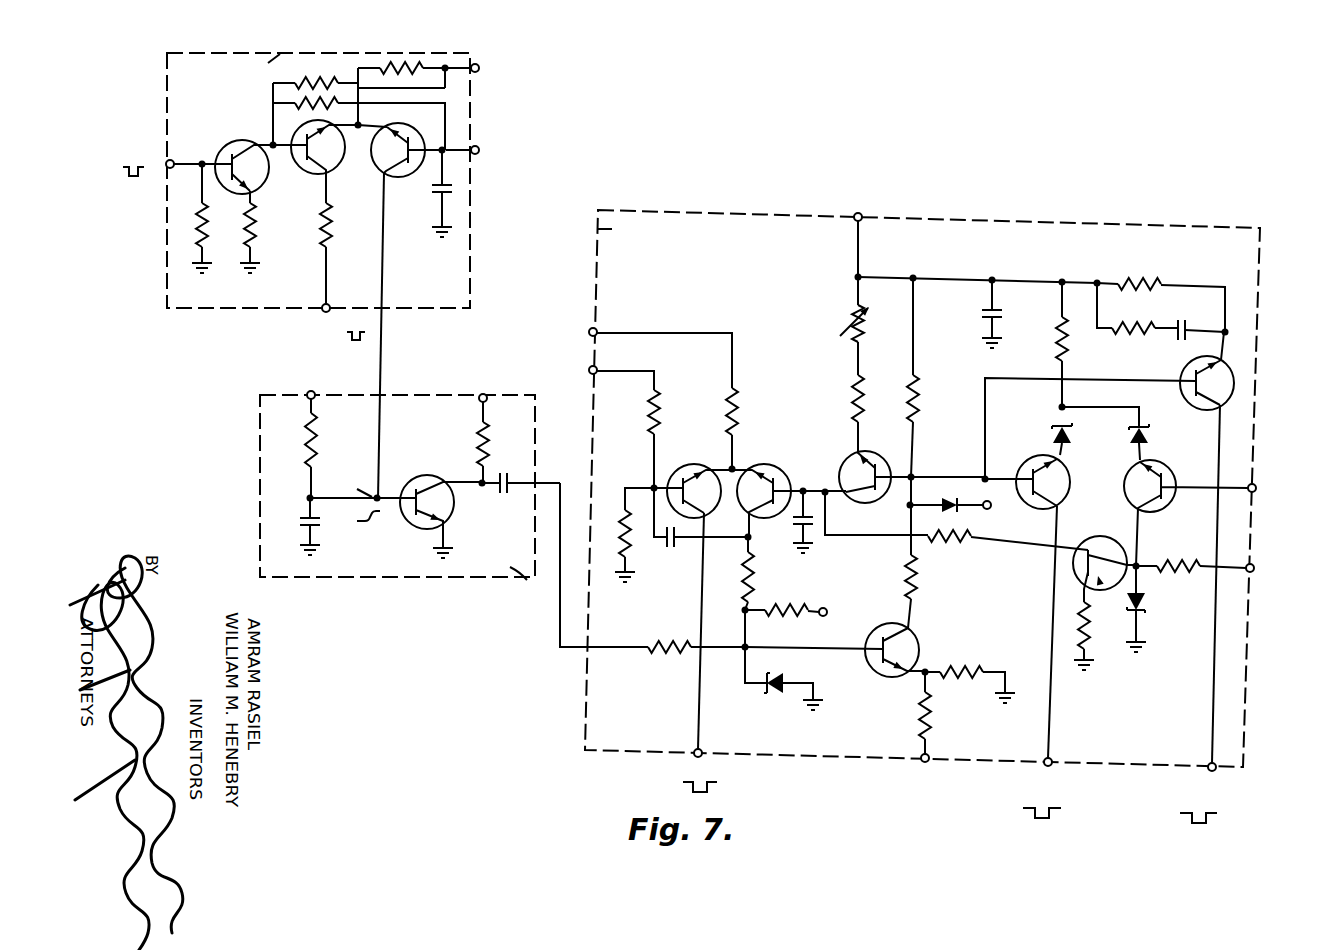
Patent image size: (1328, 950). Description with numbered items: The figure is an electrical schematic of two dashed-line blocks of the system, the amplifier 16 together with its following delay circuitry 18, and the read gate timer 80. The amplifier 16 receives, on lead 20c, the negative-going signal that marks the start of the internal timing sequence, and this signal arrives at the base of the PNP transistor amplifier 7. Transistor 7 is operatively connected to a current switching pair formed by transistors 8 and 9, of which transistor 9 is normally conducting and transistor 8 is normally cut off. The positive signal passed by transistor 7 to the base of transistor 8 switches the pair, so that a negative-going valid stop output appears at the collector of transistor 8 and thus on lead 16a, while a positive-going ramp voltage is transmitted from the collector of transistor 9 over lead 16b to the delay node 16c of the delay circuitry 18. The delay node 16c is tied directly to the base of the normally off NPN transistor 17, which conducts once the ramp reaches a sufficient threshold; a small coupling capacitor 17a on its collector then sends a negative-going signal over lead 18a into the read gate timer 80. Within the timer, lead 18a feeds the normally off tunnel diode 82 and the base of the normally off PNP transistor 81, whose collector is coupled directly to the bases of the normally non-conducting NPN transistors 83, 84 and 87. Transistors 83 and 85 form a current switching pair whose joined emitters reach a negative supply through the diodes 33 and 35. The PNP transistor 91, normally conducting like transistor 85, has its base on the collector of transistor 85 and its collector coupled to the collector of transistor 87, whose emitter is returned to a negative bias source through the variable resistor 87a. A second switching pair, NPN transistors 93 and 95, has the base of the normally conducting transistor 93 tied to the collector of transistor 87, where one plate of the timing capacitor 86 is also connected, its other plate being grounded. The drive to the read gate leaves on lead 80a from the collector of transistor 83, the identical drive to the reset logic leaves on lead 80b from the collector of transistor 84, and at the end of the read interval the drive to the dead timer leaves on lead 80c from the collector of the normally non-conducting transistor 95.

The PNP transistor amplifier 7 is at (258, 176).
The transistor 8 is at (330, 163).
The transistor 9 is at (394, 170).
The amplifier 16 is at (170, 121).
The lead 16a is at (323, 283).
The lead 16b is at (387, 267).
The delay node 16c is at (378, 496).
The transistor 17 is at (429, 480).
The coupling capacitor 17a is at (504, 474).
The delay circuitry 18 is at (393, 397).
The lead 18a is at (520, 489).
The lead 20c is at (189, 162).
The diode 33 is at (1071, 432).
The diode 35 is at (1149, 434).
The read gate timer 80 is at (997, 222).
The lead 80a is at (1050, 691).
The lead 80b is at (1219, 515).
The lead 80c is at (702, 689).
The PNP transistor 81 is at (907, 644).
The tunnel diode 82 is at (778, 695).
The transistor 83 is at (1030, 463).
The transistor 84 is at (1190, 372).
The transistor 85 is at (1136, 478).
The timing capacitor 86 is at (792, 520).
The transistor 87 is at (869, 457).
The variable resistor 87a is at (850, 317).
The PNP transistor 91 is at (1097, 542).
The transistor 93 is at (772, 465).
The transistor 95 is at (690, 465).